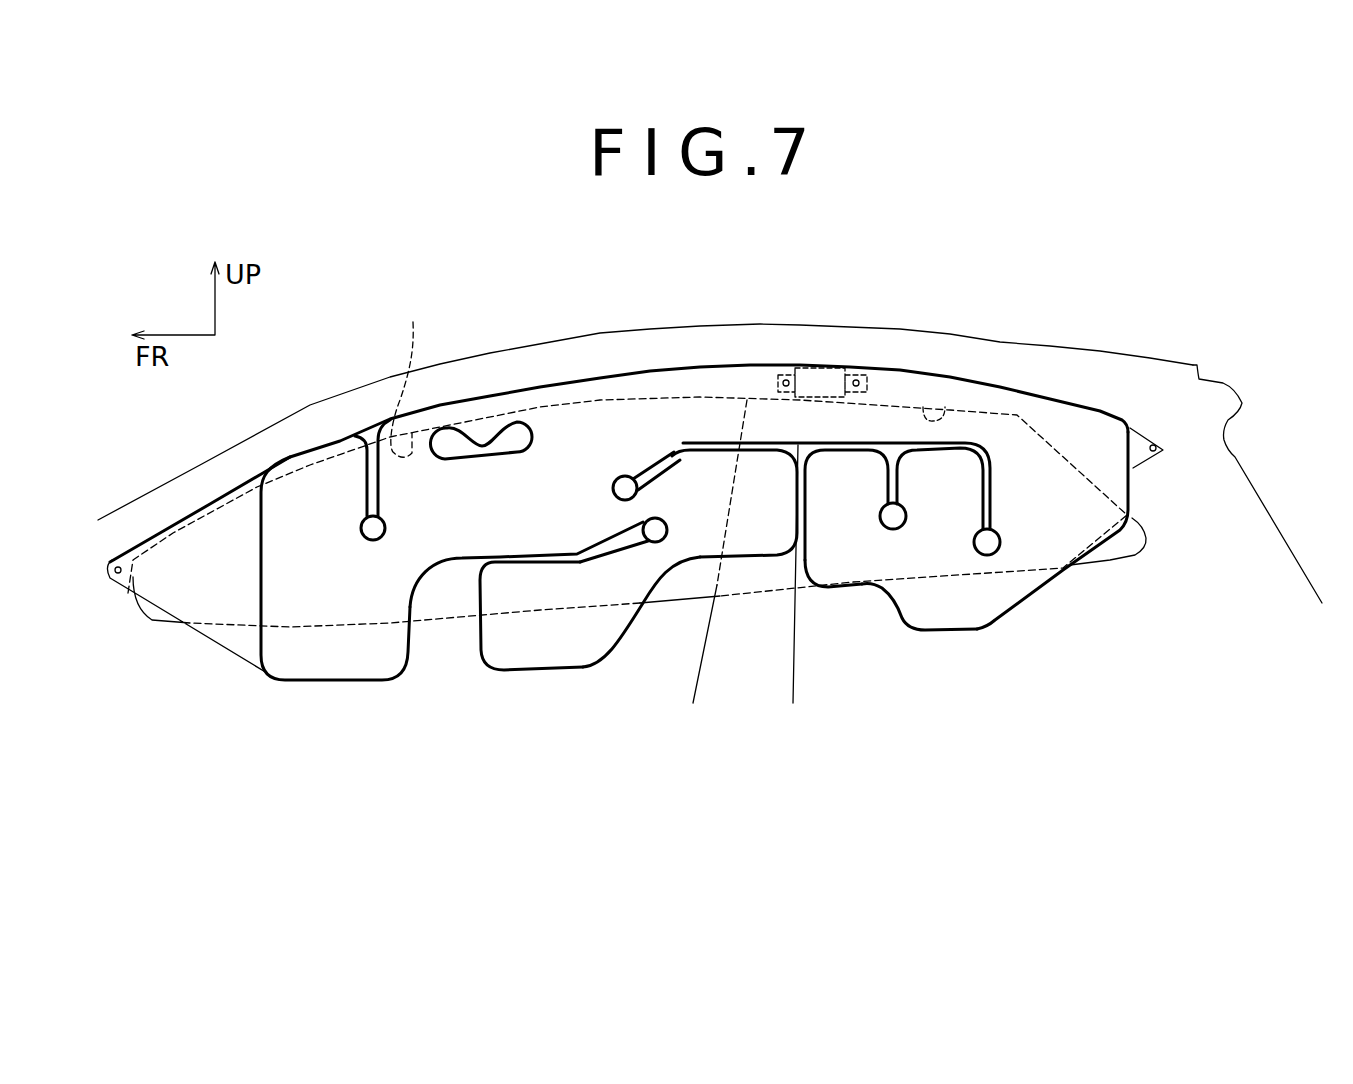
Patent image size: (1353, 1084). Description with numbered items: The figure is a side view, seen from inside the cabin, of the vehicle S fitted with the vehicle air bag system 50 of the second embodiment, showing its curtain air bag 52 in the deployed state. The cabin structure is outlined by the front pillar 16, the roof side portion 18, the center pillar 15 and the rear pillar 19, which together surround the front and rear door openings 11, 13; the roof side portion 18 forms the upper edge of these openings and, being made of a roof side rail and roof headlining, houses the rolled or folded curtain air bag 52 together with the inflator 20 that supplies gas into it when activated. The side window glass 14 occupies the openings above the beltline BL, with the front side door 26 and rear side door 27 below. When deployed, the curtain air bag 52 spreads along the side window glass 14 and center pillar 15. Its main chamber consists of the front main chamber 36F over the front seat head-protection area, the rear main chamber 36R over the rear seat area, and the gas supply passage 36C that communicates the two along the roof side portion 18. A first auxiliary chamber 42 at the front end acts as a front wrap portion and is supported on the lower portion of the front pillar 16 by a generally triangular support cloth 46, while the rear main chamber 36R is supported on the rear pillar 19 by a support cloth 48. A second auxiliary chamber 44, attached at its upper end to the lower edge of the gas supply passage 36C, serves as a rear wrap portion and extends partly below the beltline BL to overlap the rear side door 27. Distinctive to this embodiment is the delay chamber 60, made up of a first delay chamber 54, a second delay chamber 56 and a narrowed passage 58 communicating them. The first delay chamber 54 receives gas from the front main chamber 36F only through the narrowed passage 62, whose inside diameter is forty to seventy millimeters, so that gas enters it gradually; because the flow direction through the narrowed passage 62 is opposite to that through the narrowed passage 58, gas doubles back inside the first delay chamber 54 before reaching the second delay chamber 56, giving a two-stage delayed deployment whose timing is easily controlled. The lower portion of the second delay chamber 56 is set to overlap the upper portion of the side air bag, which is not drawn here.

The front door opening 11 is at (426, 319).
The rear door opening 13 is at (927, 400).
The side window glass 14 is at (630, 420).
The center pillar 15 is at (780, 657).
The front pillar 16 is at (187, 478).
The roof side portion 18 is at (570, 347).
The rear pillar 19 is at (1222, 457).
The inflator 20 is at (833, 370).
The front side door 26 is at (433, 660).
The rear side door 27 is at (1023, 615).
The front main chamber 36F is at (547, 424).
The gas supply passage 36C is at (750, 380).
The rear main chamber 36R is at (1048, 415).
The first auxiliary chamber 42 is at (327, 660).
The second auxiliary chamber 44 is at (950, 603).
The support cloth 46 is at (182, 590).
The support cloth 48 is at (1143, 440).
The vehicle air bag system 50 is at (788, 782).
The curtain air bag 52 is at (1060, 596).
The first delay chamber 54 is at (747, 540).
The second delay chamber 56 is at (528, 653).
The narrowed passage 58 is at (657, 560).
The delay chamber 60 is at (733, 758).
The narrowed passage 62 is at (642, 507).
The vehicle S is at (1121, 343).
The beltline BL is at (833, 587).